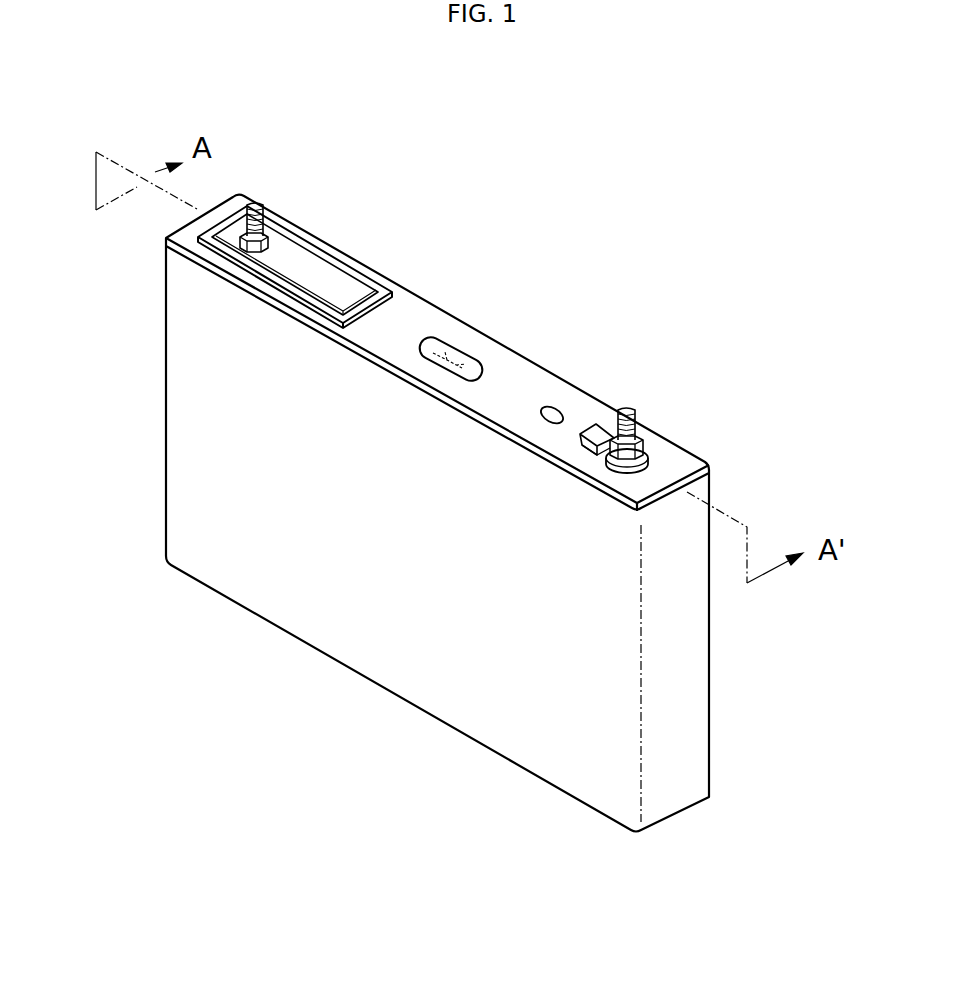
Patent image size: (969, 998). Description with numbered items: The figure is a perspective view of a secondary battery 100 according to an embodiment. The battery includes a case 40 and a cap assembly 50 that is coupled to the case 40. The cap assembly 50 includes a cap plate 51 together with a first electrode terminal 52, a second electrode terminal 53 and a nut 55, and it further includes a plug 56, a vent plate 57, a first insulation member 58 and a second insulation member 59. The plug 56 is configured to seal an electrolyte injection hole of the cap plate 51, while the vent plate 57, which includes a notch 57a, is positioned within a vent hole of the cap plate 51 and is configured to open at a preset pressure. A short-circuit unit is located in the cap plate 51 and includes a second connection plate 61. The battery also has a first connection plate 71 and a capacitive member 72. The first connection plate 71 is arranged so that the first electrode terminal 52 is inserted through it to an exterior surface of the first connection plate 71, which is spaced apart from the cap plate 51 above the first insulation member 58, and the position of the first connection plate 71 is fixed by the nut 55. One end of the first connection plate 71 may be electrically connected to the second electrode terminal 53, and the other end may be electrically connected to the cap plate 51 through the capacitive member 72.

The secondary battery 100 is at (482, 182).
The case 40 is at (382, 671).
The cap assembly 50 is at (540, 364).
The cap plate 51 is at (398, 312).
The first electrode terminal 52 is at (632, 404).
The second electrode terminal 53 is at (256, 204).
The nut 55 is at (212, 256).
The plug 56 is at (556, 409).
The vent plate 57 is at (452, 342).
The notch 57a is at (465, 355).
The first insulation member 58 is at (655, 455).
The second insulation member 59 is at (332, 247).
The second connection plate 61 is at (283, 256).
The first connection plate 71 is at (578, 434).
The capacitive member 72 is at (590, 456).